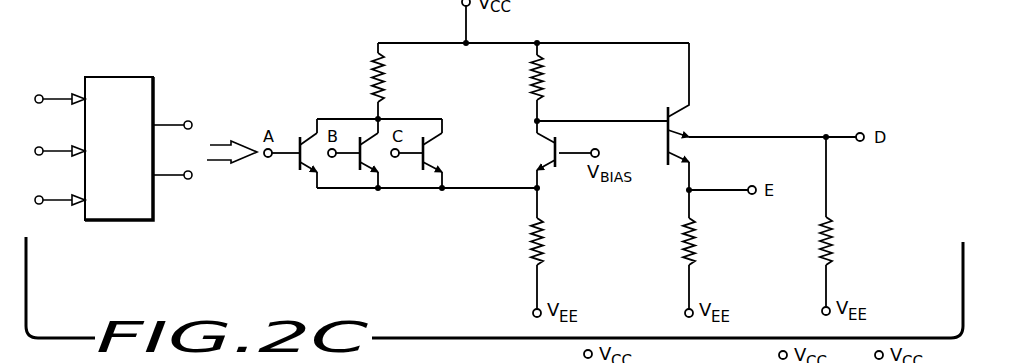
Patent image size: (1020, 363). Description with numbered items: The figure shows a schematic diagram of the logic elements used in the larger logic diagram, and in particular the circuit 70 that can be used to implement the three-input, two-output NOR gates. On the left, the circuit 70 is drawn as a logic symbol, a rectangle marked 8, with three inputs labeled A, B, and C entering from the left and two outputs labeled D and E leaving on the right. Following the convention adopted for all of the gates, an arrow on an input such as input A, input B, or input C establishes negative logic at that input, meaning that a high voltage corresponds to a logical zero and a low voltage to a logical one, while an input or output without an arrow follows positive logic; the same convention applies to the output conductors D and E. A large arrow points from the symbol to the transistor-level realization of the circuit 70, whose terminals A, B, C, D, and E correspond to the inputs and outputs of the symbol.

The circuit 70 is at (131, 77).
The gate designation 8 is at (119, 148).
The A input A is at (59, 88).
The B output B is at (59, 140).
The C output C is at (59, 190).
The D output D is at (174, 114).
The E output E is at (173, 163).